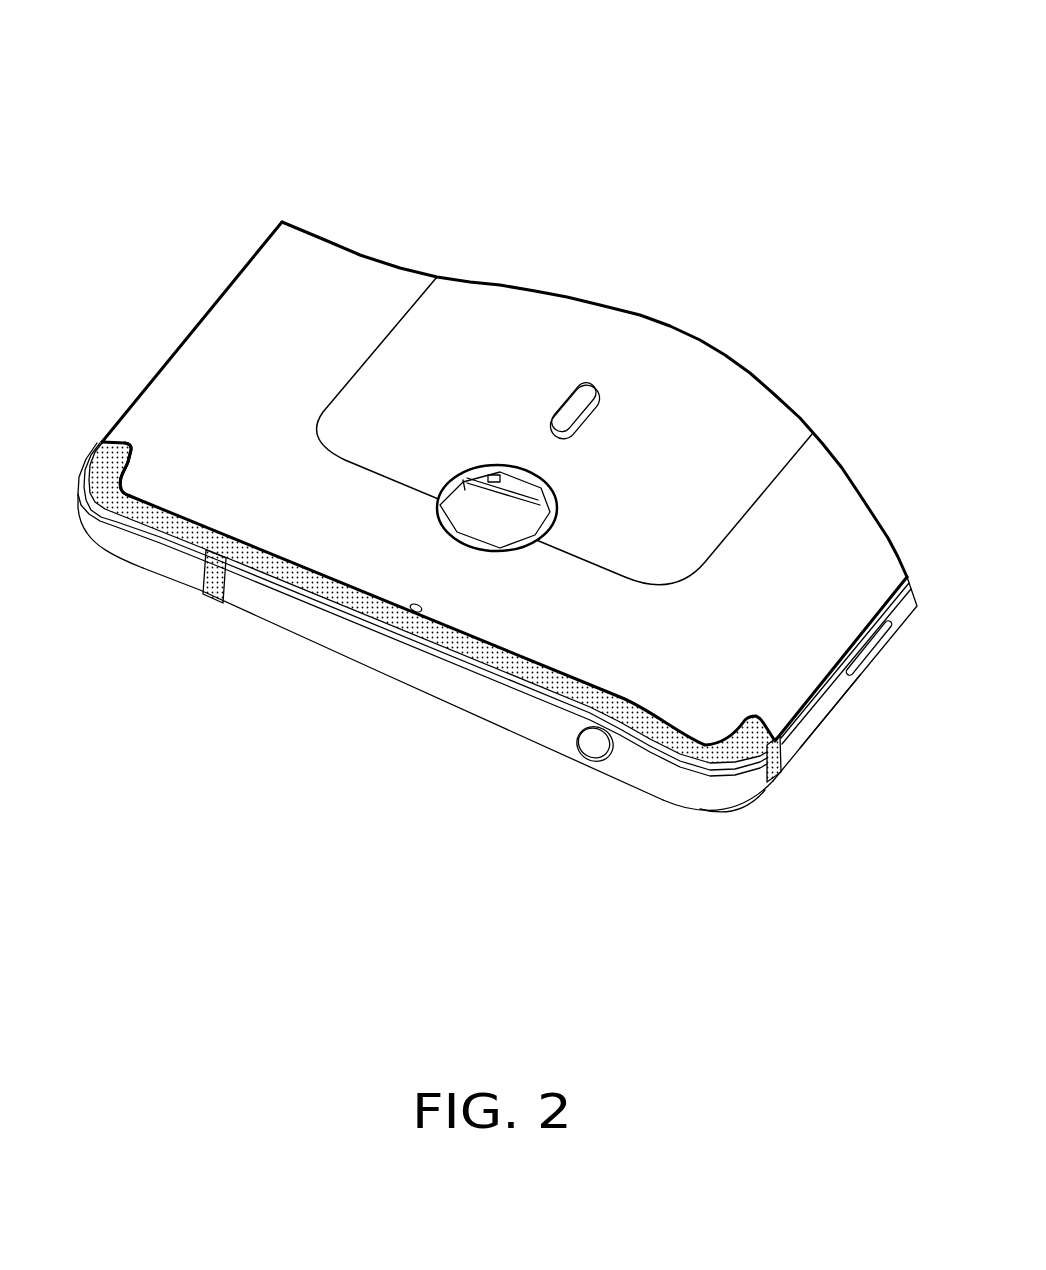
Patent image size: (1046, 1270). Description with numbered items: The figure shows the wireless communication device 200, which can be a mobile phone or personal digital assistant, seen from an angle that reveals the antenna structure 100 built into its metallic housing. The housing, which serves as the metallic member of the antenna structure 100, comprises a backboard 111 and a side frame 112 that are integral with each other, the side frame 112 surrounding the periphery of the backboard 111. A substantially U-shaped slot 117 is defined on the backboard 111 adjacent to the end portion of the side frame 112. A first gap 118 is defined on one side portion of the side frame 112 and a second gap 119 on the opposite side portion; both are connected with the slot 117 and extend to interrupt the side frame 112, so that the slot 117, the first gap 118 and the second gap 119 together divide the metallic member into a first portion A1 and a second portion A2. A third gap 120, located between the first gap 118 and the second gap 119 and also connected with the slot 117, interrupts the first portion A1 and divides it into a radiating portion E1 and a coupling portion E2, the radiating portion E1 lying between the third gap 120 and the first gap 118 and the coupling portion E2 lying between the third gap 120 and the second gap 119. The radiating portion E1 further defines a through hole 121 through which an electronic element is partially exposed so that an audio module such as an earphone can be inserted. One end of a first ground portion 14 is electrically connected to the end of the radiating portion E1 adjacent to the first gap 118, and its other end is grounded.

The wireless communication device 200 is at (556, 105).
The antenna structure 100 is at (290, 675).
The first ground portion 14 is at (447, 733).
The backboard 111 is at (328, 277).
The side frame 112 is at (830, 700).
The slot 117 is at (690, 762).
The first gap 118 is at (783, 757).
The second gap 119 is at (103, 438).
The third gap 120 is at (203, 587).
The through hole 121 is at (597, 748).
The radiating portion E1 is at (380, 660).
The coupling portion E2 is at (122, 545).
The first portion A1 is at (757, 818).
The second portion A2 is at (829, 749).